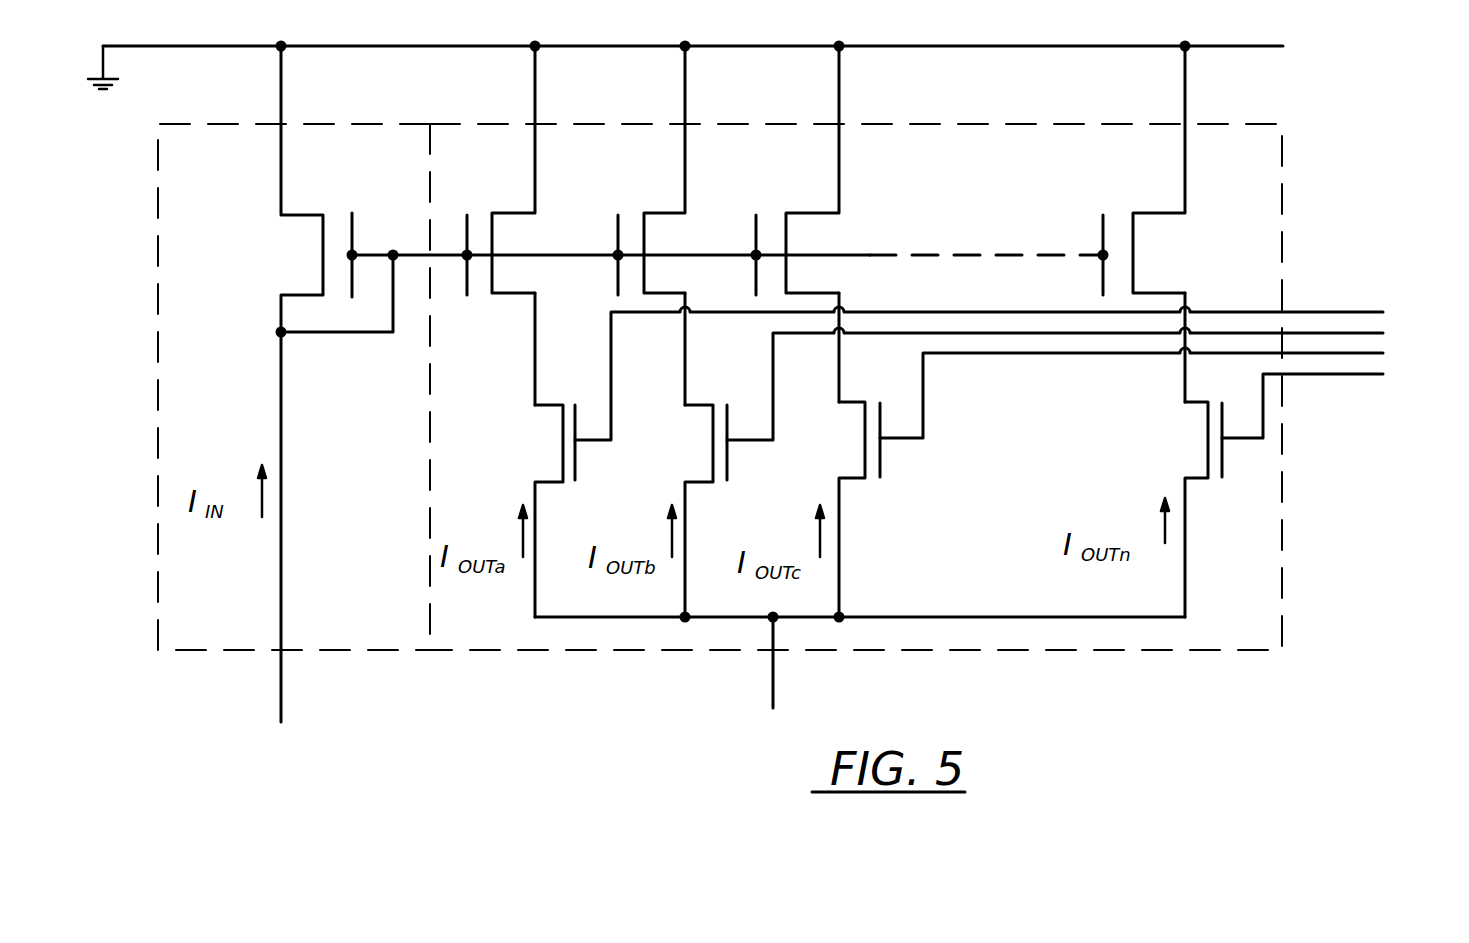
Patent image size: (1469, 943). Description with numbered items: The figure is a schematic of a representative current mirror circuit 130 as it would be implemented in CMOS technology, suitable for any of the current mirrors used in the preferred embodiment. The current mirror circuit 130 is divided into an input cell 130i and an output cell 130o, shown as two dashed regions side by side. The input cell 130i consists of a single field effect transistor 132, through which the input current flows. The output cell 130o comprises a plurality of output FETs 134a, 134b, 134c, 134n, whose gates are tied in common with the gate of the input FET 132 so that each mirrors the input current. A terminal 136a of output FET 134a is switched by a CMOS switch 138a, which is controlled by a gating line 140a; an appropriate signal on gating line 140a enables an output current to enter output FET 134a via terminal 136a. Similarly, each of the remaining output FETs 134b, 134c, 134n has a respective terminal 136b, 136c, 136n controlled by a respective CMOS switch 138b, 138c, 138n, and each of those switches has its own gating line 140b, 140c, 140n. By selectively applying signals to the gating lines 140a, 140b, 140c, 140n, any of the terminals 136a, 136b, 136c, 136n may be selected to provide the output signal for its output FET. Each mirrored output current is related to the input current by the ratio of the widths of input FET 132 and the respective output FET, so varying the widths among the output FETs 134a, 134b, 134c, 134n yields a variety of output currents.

The current mirror circuit 130 is at (133, 271).
The input cell 130i is at (158, 573).
The output cell 130o is at (952, 649).
The field effect transistor 132 is at (281, 297).
The output FET 134a is at (492, 213).
The output FET 134b is at (644, 213).
The output FET 134c is at (786, 213).
The output FET 134n is at (1133, 213).
The terminal 136a is at (535, 350).
The terminal 136b is at (685, 370).
The terminal 136c is at (839, 388).
The terminal 136n is at (1185, 380).
The CMOS switch 138a is at (548, 464).
The CMOS switch 138b is at (700, 462).
The CMOS switch 138c is at (852, 462).
The CMOS switch 138n is at (1190, 450).
The gating line 140a is at (1014, 368).
The gating line 140b is at (1090, 379).
The gating line 140c is at (1165, 389).
The gating line 140n is at (1337, 400).